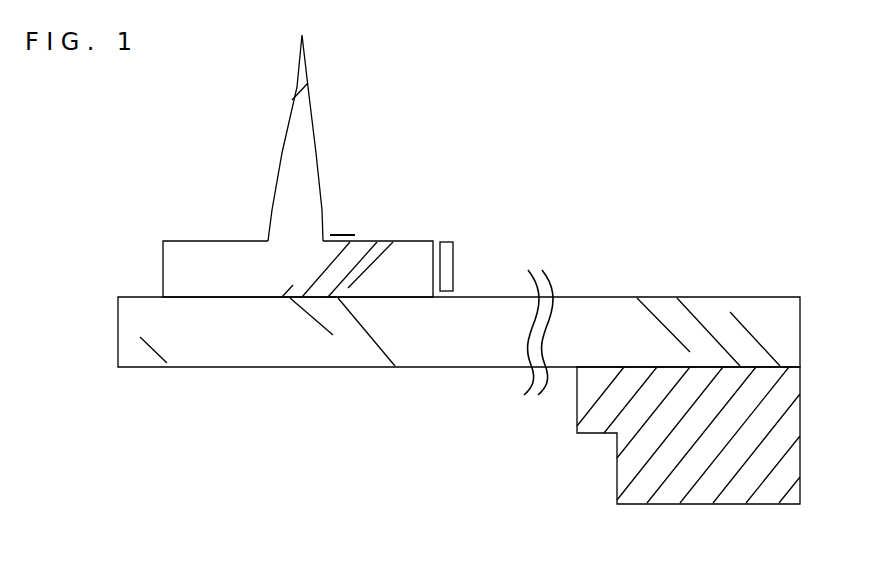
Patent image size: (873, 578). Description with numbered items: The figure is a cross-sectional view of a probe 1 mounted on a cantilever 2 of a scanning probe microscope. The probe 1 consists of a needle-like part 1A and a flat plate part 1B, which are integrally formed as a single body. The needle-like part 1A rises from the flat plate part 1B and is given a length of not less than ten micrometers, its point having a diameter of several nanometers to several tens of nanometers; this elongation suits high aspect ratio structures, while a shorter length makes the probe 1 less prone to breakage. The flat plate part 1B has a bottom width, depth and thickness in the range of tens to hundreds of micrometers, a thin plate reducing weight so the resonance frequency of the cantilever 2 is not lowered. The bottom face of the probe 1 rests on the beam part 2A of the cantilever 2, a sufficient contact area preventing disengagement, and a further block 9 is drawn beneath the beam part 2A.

The probe body / upper block 1 is at (232, 277).
The probe tip 1A is at (355, 135).
The probe side electrode 1B is at (453, 263).
The substrate plate 2 is at (568, 203).
The plate surface portion 2A is at (342, 333).
The support block 9 is at (583, 422).